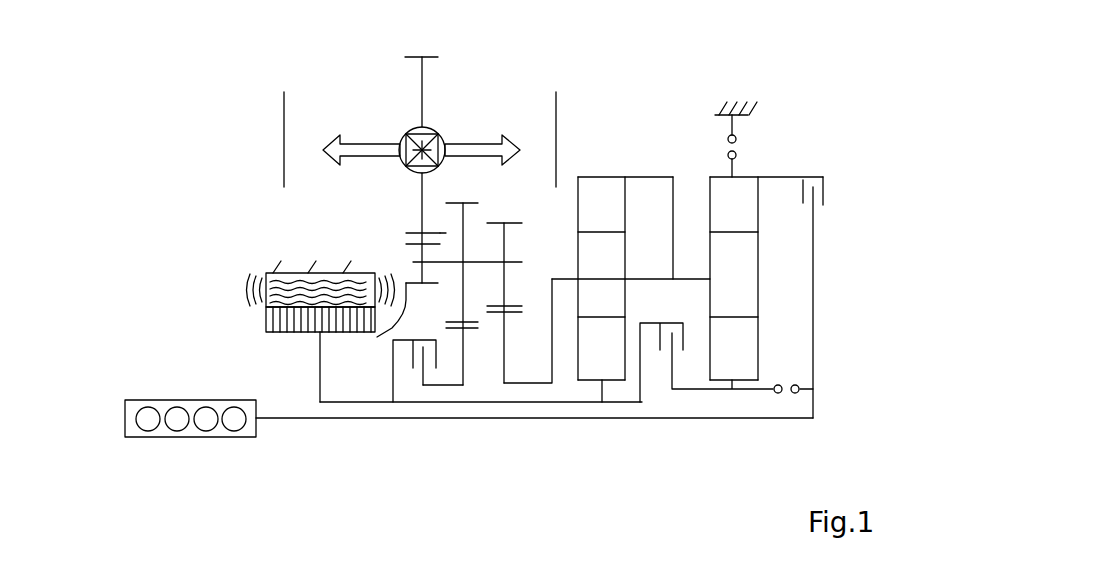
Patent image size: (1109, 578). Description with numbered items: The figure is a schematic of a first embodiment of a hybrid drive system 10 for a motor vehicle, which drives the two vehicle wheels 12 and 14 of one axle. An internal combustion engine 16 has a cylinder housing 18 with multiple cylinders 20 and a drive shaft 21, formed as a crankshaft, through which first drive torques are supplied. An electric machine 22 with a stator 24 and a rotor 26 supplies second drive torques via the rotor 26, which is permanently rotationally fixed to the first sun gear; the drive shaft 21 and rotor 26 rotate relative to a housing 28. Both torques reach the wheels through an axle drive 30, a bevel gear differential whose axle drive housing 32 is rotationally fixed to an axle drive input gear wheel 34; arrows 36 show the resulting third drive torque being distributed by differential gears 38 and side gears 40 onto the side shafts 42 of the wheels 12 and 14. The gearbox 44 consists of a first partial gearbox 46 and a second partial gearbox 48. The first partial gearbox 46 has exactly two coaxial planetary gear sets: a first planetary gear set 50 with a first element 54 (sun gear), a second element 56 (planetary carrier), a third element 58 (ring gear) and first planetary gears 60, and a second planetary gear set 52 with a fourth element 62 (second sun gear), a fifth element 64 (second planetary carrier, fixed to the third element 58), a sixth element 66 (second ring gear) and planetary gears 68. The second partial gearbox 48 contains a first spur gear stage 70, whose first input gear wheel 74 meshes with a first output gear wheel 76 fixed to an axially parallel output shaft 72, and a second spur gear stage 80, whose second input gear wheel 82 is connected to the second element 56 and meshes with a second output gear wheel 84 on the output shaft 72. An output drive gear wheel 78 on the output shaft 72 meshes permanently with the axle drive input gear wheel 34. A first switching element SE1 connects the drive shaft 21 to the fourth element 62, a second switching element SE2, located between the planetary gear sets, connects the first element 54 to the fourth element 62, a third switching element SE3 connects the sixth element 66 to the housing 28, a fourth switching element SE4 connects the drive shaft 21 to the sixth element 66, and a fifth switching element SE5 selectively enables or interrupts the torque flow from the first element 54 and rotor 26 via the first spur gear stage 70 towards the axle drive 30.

The hybrid drive system 10 is at (829, 117).
The vehicle wheel 12 is at (284, 130).
The vehicle wheel 14 is at (558, 118).
The internal combustion engine 16 is at (173, 418).
The cylinder housing 18 is at (195, 437).
The cylinders 20 is at (215, 439).
The drive shaft 21 is at (296, 417).
The electric machine 22 is at (277, 293).
The stator 24 is at (280, 283).
The rotor 26 is at (266, 318).
The housing 28 is at (734, 106).
The axle drive 30 is at (422, 148).
The axle drive housing 32 is at (442, 125).
The axle drive input gear wheel 34 is at (422, 72).
The arrows 36 is at (361, 158).
The differential gears 38 is at (408, 125).
The side gears 40 is at (395, 141).
The side shafts 42 is at (403, 158).
The gearbox 44 is at (848, 165).
The first partial gearbox 46 is at (837, 413).
The second partial gearbox 48 is at (560, 194).
The first planetary gear set 50 is at (625, 313).
The second planetary gear set 52 is at (730, 406).
The first element 54 is at (612, 372).
The second element 56 is at (563, 278).
The third element 58 is at (612, 181).
The first planetary gears 60 is at (622, 263).
The fourth element 62 is at (753, 355).
The fifth element 64 is at (757, 280).
The sixth element 66 is at (748, 183).
The planetary gears 68 is at (755, 298).
The first spur gear stage 70 is at (452, 404).
The output shaft 72 is at (506, 266).
The first input gear wheel 74 is at (463, 365).
The first output gear wheel 76 is at (462, 303).
The output drive gear wheel 78 is at (396, 331).
The second spur gear stage 80 is at (527, 404).
The second input gear wheel 82 is at (507, 364).
The second output gear wheel 84 is at (504, 248).
The first switching element SE1 is at (781, 406).
The second switching element SE2 is at (669, 305).
The third switching element SE3 is at (753, 135).
The fourth switching element SE4 is at (839, 194).
The fifth switching element SE5 is at (408, 396).